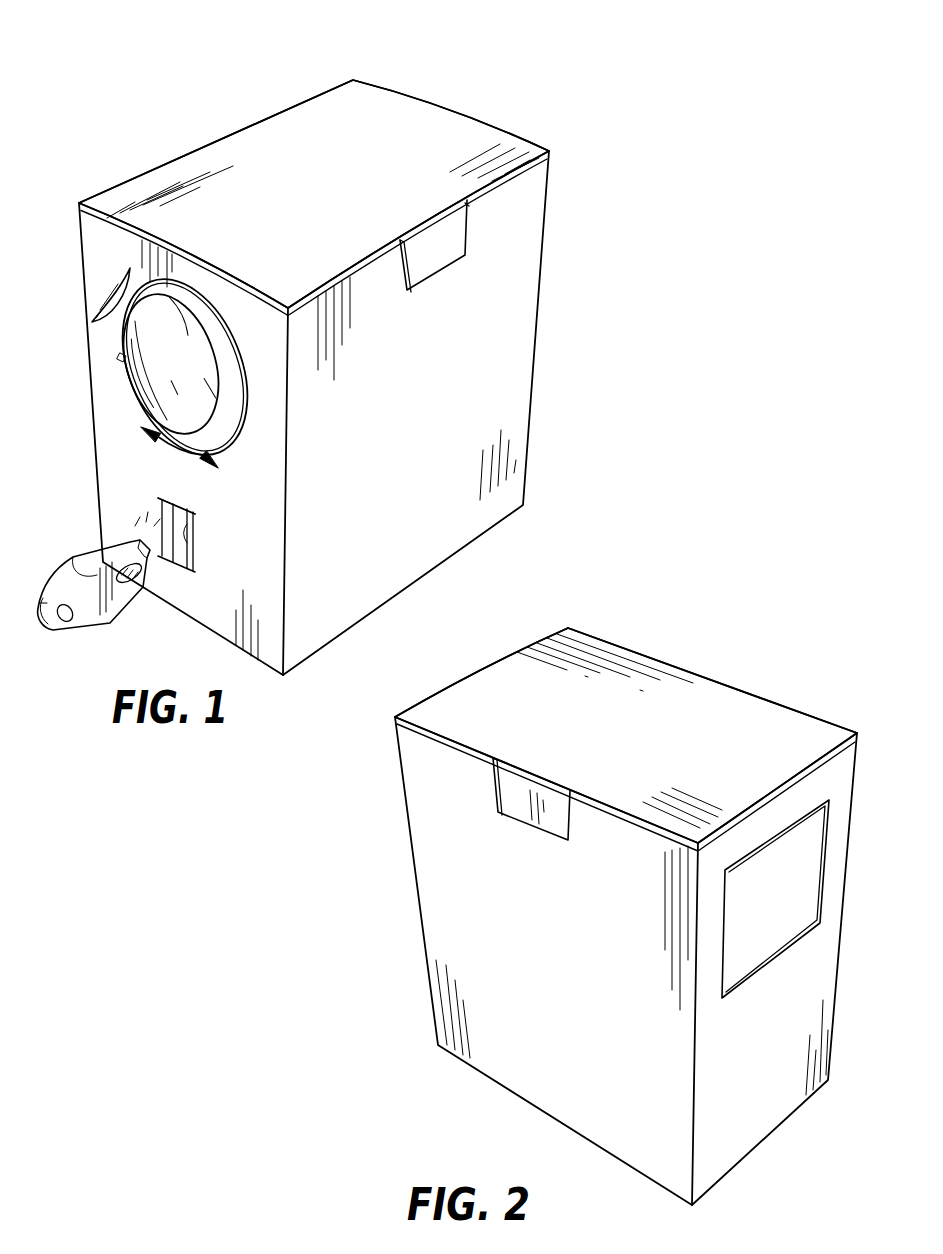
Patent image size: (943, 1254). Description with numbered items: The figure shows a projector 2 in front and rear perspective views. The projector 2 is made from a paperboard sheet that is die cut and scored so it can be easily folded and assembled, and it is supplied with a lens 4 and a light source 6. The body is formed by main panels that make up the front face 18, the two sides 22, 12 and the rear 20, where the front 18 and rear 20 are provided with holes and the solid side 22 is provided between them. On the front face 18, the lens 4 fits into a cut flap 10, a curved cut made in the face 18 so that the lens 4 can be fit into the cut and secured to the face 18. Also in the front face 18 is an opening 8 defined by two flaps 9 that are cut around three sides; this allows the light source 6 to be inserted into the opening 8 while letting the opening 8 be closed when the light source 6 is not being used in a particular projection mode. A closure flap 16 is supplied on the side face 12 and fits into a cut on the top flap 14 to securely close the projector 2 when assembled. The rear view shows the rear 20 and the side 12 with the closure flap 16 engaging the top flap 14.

In FIG. 1, the projector 2 is at (505, 113).
In FIG. 1, the lens 4 is at (133, 378).
In FIG. 1, the light source 6 is at (82, 556).
In FIG. 1, the opening 8 is at (193, 542).
In FIG. 1, the flaps 9 is at (166, 500).
In FIG. 1, the cut flap 10 is at (168, 446).
In FIG. 1, the face 12 is at (428, 446).
In FIG. 2, the face 12 is at (547, 990).
In FIG. 1, the top flap 14 is at (316, 214).
In FIG. 2, the top flap 14 is at (647, 759).
In FIG. 1, the closure flap 16 is at (432, 247).
In FIG. 1, the face 18 is at (121, 270).
In FIG. 2, the rear 20 is at (757, 1075).
In FIG. 2, the side 22 is at (793, 693).